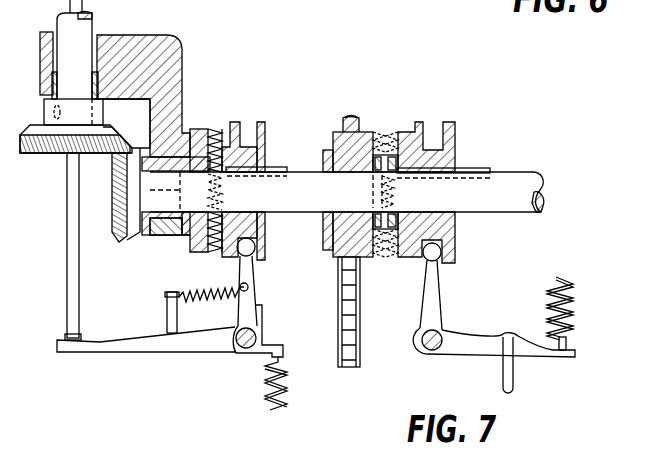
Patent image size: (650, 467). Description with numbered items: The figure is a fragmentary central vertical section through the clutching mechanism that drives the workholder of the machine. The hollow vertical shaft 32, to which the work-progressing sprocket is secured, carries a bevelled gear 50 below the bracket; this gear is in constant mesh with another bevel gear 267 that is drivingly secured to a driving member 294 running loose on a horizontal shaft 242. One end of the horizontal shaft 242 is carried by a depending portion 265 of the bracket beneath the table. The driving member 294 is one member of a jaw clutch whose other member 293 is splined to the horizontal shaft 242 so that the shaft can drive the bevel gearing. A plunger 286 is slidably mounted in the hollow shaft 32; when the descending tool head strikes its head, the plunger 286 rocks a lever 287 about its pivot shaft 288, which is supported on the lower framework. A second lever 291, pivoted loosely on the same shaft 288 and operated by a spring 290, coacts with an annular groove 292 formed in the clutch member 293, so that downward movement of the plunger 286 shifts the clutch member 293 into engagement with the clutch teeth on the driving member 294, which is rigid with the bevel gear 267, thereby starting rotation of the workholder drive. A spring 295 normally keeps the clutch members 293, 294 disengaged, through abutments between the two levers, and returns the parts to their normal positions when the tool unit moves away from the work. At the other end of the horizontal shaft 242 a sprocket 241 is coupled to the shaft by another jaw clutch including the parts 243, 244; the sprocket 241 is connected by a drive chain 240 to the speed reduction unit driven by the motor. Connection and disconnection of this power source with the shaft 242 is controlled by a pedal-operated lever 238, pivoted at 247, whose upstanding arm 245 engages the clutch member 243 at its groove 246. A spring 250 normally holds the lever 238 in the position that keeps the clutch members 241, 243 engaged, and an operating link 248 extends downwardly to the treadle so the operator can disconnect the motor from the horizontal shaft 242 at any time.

The shaft 32 is at (80, 29).
The bevelled gear 50 is at (112, 129).
The depending portion of the bracket 265 is at (168, 100).
The bevel gear 267 is at (109, 242).
The plunger 286 is at (67, 256).
The lever 287 is at (146, 340).
The pivot shaft 288 is at (262, 334).
The spring 290 is at (212, 283).
The lever 291 is at (250, 295).
The annular groove 292 is at (250, 130).
The clutch member 293 is at (237, 122).
The driving member 294 is at (197, 130).
The spring 295 is at (287, 393).
The pedal-operated lever 238 is at (527, 352).
The drive chain 240 is at (347, 352).
The sprocket 241 is at (370, 130).
The horizontal shaft 242 is at (517, 181).
The clutch member 243 is at (453, 131).
The jaw clutch part 244 is at (477, 168).
The upstanding arm 245 is at (433, 283).
The groove 246 is at (432, 250).
The pivot pin 247 is at (443, 333).
The operating link 248 is at (506, 392).
The spring 250 is at (568, 297).